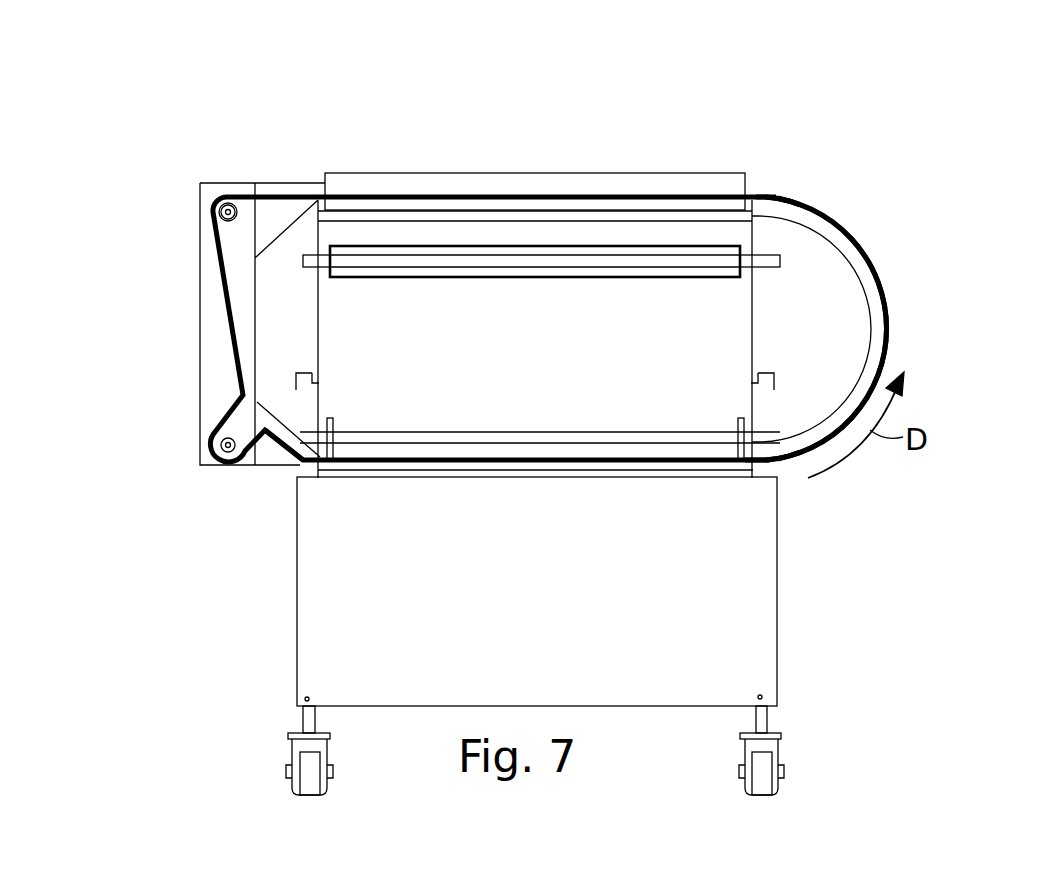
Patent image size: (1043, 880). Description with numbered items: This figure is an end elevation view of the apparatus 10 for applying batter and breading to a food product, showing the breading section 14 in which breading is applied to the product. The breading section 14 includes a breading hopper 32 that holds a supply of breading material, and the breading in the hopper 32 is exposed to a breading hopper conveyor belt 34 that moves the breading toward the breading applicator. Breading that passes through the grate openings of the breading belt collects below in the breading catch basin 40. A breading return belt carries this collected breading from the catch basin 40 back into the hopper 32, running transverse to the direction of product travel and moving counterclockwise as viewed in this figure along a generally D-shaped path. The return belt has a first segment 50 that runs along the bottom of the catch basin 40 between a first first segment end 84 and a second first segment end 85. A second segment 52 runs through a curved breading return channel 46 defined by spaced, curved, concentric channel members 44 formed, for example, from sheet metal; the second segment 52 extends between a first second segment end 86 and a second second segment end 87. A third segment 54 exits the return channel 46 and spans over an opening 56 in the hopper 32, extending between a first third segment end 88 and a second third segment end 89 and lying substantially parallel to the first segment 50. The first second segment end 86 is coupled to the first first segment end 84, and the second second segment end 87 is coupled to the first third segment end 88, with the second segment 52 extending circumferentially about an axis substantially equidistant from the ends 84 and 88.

The apparatus 10 is at (147, 171).
The breading section 14 is at (851, 182).
The breading hopper 32 is at (507, 188).
The breading hopper conveyor belt 34 is at (505, 278).
The breading catch basin 40 is at (543, 470).
The channel members 44 is at (975, 306).
The breading return channel 46 is at (862, 262).
The first segment 50 is at (473, 459).
The second segment 52 is at (888, 290).
The third segment 54 is at (620, 198).
The opening 56 is at (428, 228).
The first first segment end 84 is at (758, 462).
The second first segment end 85 is at (305, 463).
The first second segment end 86 is at (790, 456).
The second second segment end 87 is at (788, 197).
The first third segment end 88 is at (766, 197).
The second third segment end 89 is at (226, 200).